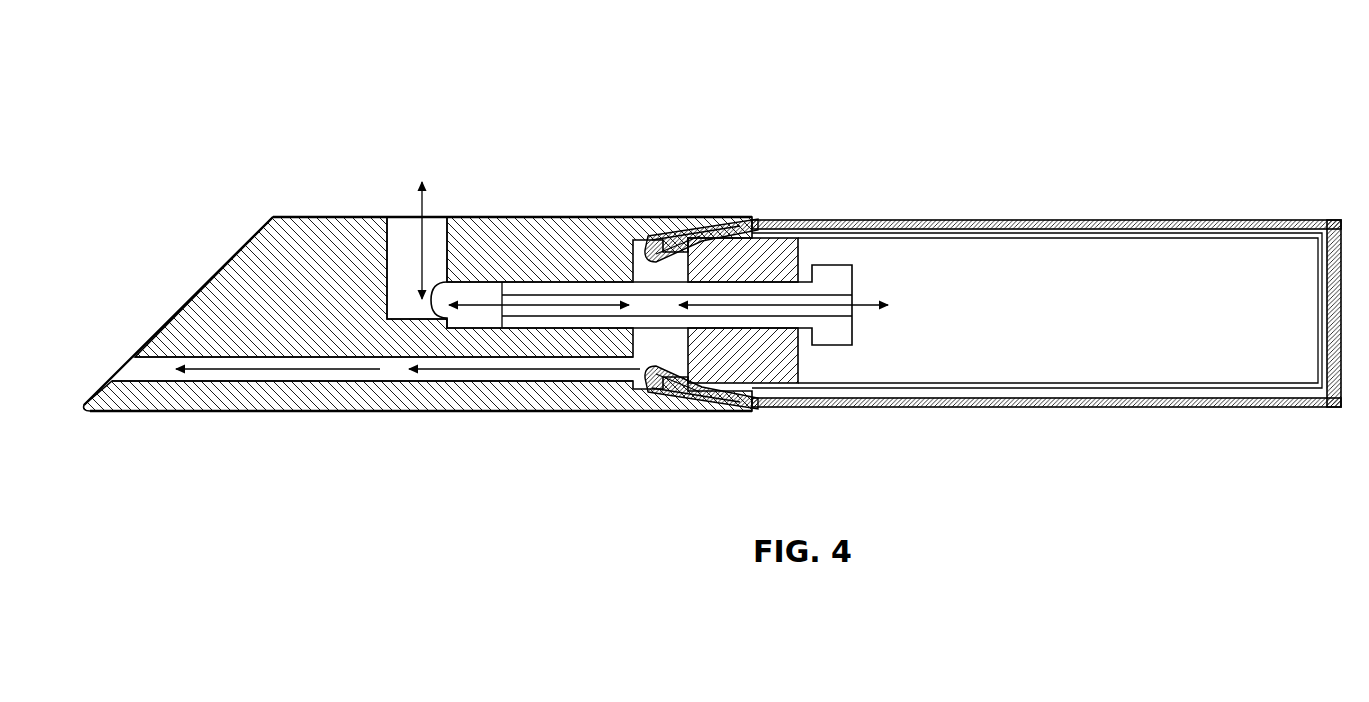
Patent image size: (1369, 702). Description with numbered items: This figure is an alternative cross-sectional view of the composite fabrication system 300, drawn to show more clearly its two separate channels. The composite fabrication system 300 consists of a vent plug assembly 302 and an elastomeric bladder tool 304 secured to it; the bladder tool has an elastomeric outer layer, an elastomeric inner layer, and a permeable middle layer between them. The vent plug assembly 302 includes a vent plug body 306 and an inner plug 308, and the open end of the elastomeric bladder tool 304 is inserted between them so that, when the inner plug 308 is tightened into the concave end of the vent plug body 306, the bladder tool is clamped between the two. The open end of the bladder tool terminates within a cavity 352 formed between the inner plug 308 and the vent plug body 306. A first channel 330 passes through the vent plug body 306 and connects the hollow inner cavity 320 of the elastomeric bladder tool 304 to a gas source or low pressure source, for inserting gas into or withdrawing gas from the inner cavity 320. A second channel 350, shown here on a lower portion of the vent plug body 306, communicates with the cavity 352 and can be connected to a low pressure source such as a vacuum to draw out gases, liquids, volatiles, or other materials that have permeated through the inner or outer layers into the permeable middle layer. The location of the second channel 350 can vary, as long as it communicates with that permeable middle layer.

The composite fabrication system 300 is at (698, 264).
The vent plug assembly 302 is at (471, 304).
The elastomeric bladder tool 304 is at (959, 312).
The vent plug body 306 is at (237, 268).
The inner plug 308 is at (745, 247).
The inner cavity 320 is at (1085, 310).
The first channel 330 is at (398, 204).
The second channel 350 is at (234, 378).
The cavity 352 is at (628, 259).